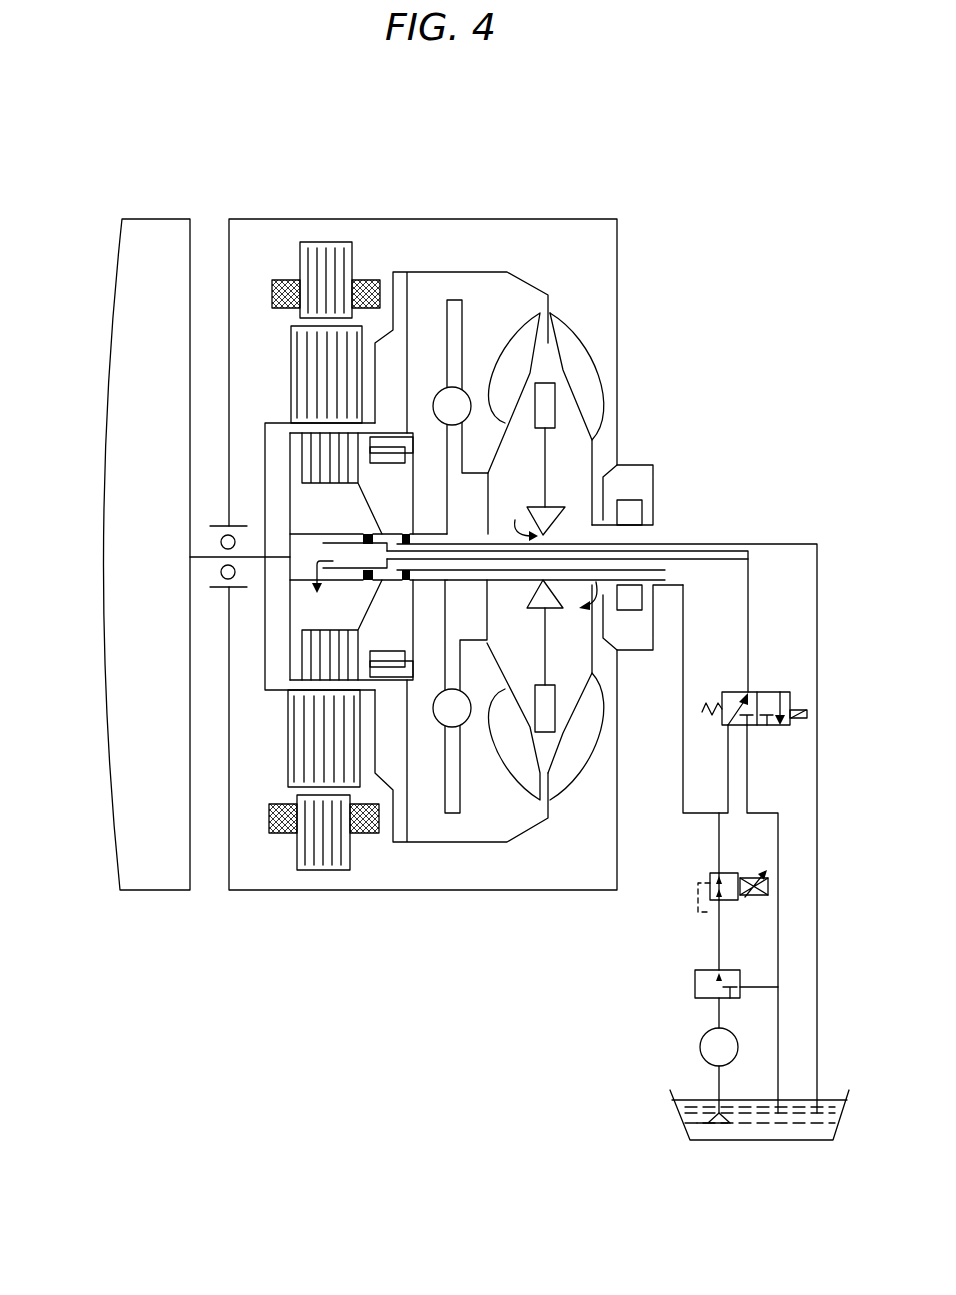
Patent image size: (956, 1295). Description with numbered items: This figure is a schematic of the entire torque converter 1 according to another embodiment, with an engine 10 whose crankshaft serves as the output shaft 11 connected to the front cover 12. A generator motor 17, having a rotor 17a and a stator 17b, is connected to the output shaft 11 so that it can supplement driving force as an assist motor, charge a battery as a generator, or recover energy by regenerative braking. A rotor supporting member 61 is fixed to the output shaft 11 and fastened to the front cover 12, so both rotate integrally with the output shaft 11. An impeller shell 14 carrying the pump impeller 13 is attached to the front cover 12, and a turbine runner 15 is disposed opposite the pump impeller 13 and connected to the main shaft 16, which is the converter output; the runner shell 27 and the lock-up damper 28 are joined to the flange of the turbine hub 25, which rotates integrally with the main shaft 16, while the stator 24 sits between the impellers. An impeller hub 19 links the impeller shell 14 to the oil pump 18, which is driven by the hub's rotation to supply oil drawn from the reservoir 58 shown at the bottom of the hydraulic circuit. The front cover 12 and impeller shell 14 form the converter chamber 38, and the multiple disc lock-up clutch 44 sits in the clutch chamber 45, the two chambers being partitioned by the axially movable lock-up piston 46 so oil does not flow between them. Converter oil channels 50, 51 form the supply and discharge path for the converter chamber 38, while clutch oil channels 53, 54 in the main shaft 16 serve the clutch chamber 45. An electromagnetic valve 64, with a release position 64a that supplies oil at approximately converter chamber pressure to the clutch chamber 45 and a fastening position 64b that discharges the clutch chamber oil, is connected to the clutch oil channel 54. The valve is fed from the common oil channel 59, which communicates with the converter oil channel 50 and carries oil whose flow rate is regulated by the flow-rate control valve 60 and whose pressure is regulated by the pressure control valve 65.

The torque converter 1 is at (455, 206).
The engine 10 is at (150, 228).
The output shaft 11 is at (188, 555).
The front cover 12 is at (288, 613).
The pump impeller 13 is at (588, 382).
The impeller shell 14 is at (573, 328).
The turbine runner 15 is at (510, 345).
The main shaft 16 is at (338, 543).
The generator motor 17 is at (199, 556).
The rotor 17a is at (302, 347).
The stator 17b is at (313, 298).
The oil pump 18 is at (637, 507).
The impeller hub 19 is at (593, 452).
The stator 24 is at (544, 640).
The turbine hub 25 is at (483, 578).
The runner shell 27 is at (497, 770).
The lock-up damper 28 is at (432, 734).
The converter chamber 38 is at (585, 640).
The lock-up clutch 44 is at (284, 668).
The clutch chamber 45 is at (335, 621).
The lock-up piston 46 is at (413, 627).
The converter oil channel 50 is at (682, 737).
The converter oil channel 51 is at (755, 538).
The clutch oil channel 53 is at (723, 548).
The clutch oil channel 54 is at (715, 560).
The oil tank 58 is at (740, 1132).
The common oil channel 59 is at (716, 935).
The flow-rate control valve 60 is at (694, 985).
The rotor supporting member 61 is at (264, 637).
The electromagnetic valve 64 is at (763, 902).
The release position 64a is at (747, 726).
The fastening position 64b is at (777, 726).
The pressure control valve 65 is at (733, 898).